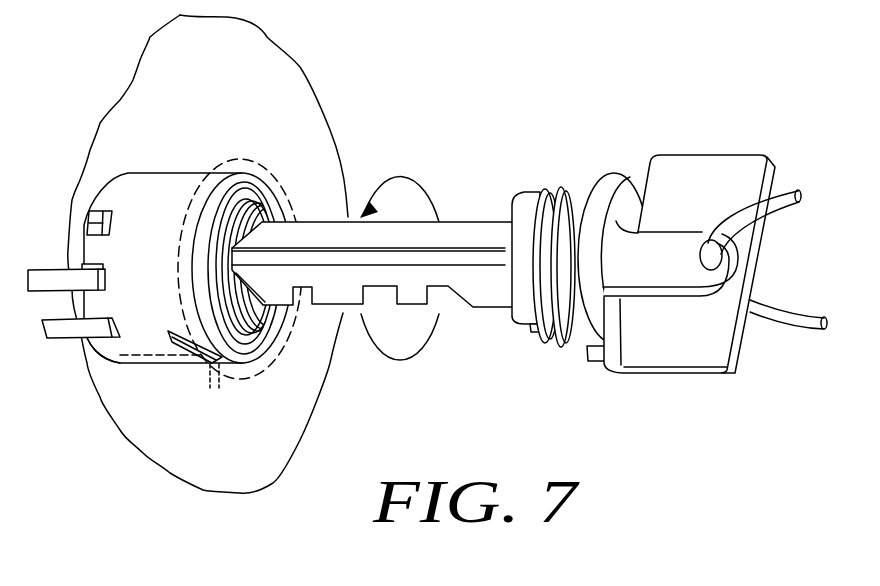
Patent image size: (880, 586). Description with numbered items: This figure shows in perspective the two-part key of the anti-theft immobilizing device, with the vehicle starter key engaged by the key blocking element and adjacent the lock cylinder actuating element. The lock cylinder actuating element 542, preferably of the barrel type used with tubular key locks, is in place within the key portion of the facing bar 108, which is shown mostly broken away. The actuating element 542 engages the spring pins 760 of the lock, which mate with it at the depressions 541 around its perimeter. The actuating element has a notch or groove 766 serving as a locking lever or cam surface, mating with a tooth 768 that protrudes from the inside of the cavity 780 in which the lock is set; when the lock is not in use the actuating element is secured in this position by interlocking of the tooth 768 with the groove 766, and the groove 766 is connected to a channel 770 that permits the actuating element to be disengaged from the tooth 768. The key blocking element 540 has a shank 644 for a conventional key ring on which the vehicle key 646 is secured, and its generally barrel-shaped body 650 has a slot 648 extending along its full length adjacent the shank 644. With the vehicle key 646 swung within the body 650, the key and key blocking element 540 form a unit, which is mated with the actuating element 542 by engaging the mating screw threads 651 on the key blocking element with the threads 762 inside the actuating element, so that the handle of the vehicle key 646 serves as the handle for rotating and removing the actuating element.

The facing bar 108 is at (256, 62).
The key blocking element 540 is at (594, 362).
The depressions 541 is at (87, 223).
The lock cylinder actuating element 542 is at (150, 323).
The shank 644 is at (680, 266).
The vehicle key 646 is at (658, 333).
The slot 648 is at (530, 326).
The body of the key blocking element 650 is at (558, 188).
The mating screw threads 651 is at (546, 190).
The spring pins 760 is at (60, 328).
The threads 762 is at (256, 213).
The notch 766 is at (178, 358).
The tooth 768 is at (212, 390).
The channel 770 is at (98, 362).
The cavity 780 is at (224, 172).